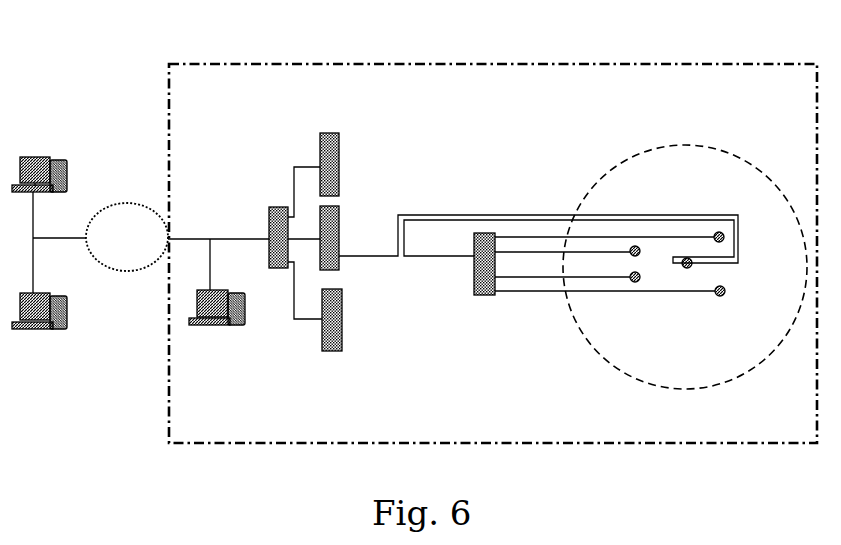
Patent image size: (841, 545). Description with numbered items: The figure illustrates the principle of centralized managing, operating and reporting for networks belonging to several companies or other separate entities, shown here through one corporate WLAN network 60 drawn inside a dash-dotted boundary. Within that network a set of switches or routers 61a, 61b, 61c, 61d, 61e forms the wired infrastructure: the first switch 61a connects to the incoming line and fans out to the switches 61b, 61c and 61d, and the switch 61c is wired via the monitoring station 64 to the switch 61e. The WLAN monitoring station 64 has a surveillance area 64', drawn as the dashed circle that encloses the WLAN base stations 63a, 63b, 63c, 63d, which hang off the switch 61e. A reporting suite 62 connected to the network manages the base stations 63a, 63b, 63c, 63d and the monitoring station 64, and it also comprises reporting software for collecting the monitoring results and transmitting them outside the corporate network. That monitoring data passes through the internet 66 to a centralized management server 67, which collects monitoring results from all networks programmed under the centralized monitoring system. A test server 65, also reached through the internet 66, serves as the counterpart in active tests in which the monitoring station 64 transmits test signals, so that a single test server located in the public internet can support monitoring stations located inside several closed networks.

The corporate WLAN network 60 is at (555, 64).
The switch 61a is at (272, 208).
The switch 61b is at (339, 148).
The switch 61c is at (339, 238).
The switch 61d is at (342, 330).
The switch 61e is at (475, 295).
The reporting suite 62 is at (210, 326).
The WLAN base station 63a is at (720, 232).
The WLAN base station 63b is at (636, 237).
The WLAN base station 63c is at (637, 282).
The WLAN base station 63d is at (721, 296).
The monitoring station 64 is at (685, 291).
The surveillance area 64' is at (685, 253).
The test server 65 is at (37, 330).
The internet 66 is at (130, 194).
The centralized management server 67 is at (37, 156).